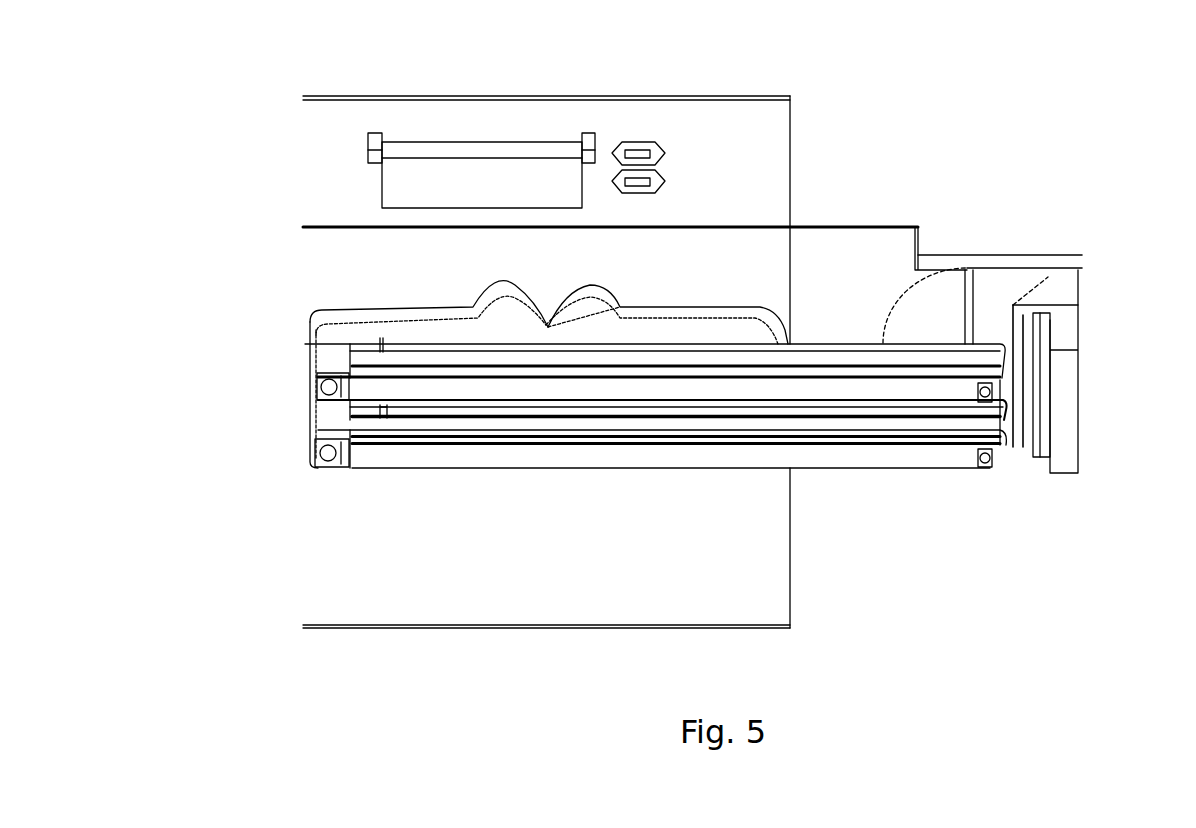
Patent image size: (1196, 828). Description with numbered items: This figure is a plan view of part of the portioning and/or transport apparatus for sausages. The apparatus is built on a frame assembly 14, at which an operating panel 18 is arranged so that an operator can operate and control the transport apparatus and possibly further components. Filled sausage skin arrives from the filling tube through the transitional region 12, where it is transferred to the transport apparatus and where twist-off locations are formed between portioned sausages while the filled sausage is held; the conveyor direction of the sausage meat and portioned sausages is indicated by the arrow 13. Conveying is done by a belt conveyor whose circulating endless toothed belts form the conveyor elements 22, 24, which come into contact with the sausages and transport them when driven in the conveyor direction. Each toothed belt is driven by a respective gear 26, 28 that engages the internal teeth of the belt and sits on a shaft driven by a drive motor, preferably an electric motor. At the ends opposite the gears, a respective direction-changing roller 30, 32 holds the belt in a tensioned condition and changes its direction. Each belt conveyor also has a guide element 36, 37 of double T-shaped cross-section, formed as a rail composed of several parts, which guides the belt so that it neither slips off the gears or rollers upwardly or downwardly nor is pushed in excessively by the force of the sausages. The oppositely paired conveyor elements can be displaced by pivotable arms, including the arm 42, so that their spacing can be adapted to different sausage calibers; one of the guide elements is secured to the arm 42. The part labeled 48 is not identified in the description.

The transitional region 12 is at (1029, 238).
The arrow 13 is at (267, 413).
The frame assembly 14 is at (358, 646).
The operating panel 18 is at (516, 170).
The conveyor element 22 is at (815, 355).
The conveyor element 24 is at (817, 432).
The gear 26 is at (322, 382).
The gear 28 is at (325, 460).
The direction-changing roller 30 is at (1000, 375).
The direction-changing roller 32 is at (988, 462).
The guide element 36 is at (835, 395).
The guide element 37 is at (853, 458).
The pivotable arm 42 is at (660, 327).
The cover 48 is at (435, 313).